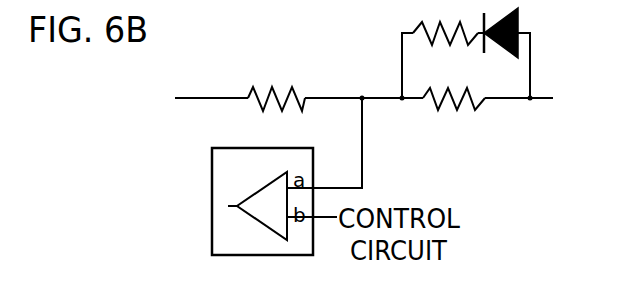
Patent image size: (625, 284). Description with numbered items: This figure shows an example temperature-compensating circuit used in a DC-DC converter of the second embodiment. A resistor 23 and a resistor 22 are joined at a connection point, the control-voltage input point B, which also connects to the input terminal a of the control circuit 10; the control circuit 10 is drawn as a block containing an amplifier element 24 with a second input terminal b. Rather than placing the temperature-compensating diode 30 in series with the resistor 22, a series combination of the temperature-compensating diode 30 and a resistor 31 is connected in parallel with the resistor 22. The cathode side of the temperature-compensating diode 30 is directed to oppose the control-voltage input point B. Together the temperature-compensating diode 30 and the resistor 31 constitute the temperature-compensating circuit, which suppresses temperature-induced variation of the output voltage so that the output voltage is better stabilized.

The control circuit 10 is at (212, 176).
The resistor 22 is at (467, 113).
The resistor 23 is at (272, 87).
The amplifier 24 is at (257, 193).
The temperature-compensating diode 30 is at (502, 50).
The resistor 31 is at (445, 45).
The control-voltage input point B is at (365, 103).